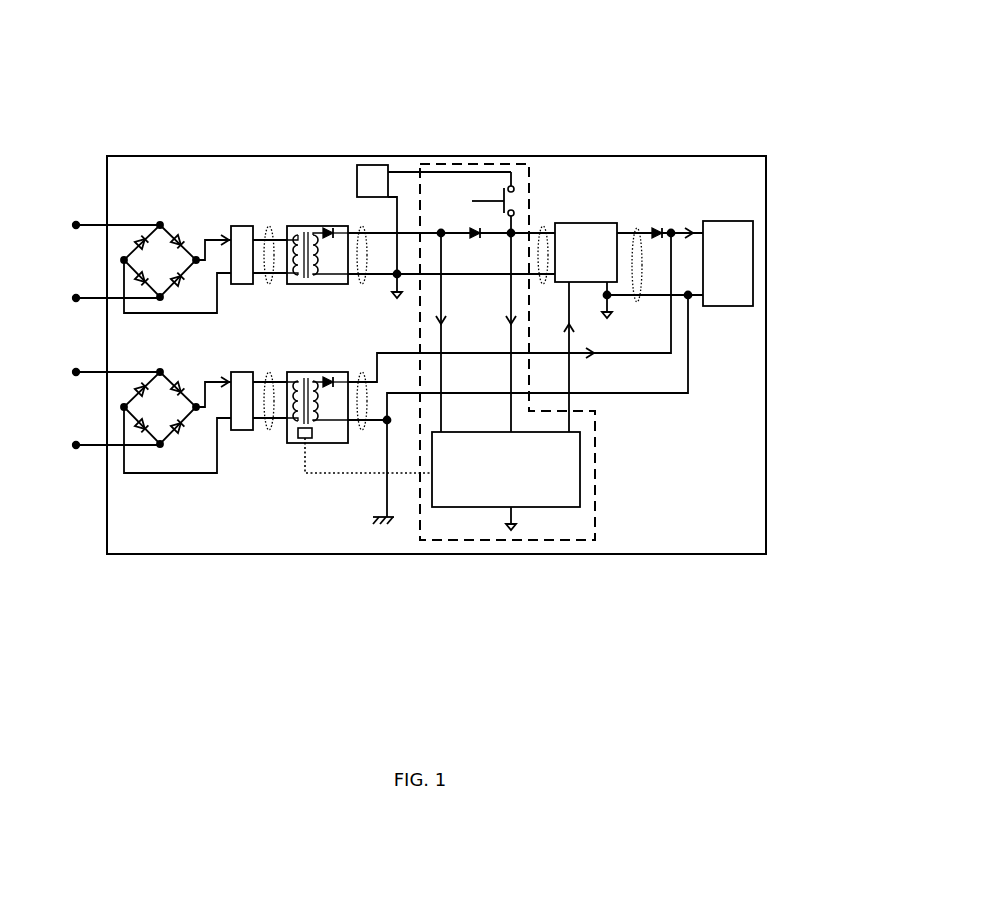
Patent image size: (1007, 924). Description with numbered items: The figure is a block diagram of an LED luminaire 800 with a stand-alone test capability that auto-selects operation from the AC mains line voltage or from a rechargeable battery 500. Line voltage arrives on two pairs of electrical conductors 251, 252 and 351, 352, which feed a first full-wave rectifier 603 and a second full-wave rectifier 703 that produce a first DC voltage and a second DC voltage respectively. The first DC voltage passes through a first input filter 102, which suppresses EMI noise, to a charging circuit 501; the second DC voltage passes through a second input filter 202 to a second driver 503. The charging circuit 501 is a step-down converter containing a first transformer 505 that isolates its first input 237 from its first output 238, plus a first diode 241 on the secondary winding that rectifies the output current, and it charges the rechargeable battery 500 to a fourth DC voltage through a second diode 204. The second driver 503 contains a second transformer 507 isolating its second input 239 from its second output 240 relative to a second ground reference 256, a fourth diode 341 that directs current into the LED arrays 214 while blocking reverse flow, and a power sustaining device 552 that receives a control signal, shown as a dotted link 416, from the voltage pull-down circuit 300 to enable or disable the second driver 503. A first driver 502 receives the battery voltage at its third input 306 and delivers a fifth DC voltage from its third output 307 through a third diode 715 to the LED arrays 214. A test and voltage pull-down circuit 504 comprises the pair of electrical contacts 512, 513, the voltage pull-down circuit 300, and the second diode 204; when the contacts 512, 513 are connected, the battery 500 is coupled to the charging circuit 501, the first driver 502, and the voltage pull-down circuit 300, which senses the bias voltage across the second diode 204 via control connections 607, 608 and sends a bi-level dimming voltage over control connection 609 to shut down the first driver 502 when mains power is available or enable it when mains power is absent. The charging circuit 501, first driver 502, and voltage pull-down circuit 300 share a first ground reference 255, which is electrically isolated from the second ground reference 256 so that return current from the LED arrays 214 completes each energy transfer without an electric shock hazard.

The electrical conductor 251 is at (75, 223).
The electrical conductor 252 is at (76, 299).
The electrical conductor 351 is at (76, 373).
The electrical conductor 352 is at (76, 446).
The first full-wave rectifier 603 is at (157, 211).
The second full-wave rectifier 703 is at (166, 462).
The first input filter 102 is at (245, 226).
The second input filter 202 is at (242, 371).
The first input 237 is at (268, 226).
The first output 238 is at (361, 227).
The second input 239 is at (268, 431).
The second output 240 is at (362, 431).
The third input 306 is at (543, 227).
The third output 307 is at (638, 229).
The charging circuit 501 is at (300, 183).
The first transformer 505 is at (306, 284).
The first diode 241 is at (327, 229).
The second driver 503 is at (309, 464).
The second transformer 507 is at (297, 442).
The fourth diode 341 is at (329, 370).
The power sustaining device 552 is at (303, 439).
The feedback signal line 416 is at (371, 474).
The rechargeable battery 500 is at (373, 165).
The electrical contact 512 is at (512, 186).
The electrical contact 513 is at (513, 211).
The second diode 204 is at (473, 229).
The LED luminaire 800 is at (413, 142).
The first driver 502 is at (589, 209).
The third diode 715 is at (661, 230).
The LED array 214 is at (722, 307).
The first ground reference 255 is at (394, 298).
The second ground reference 256 is at (388, 526).
The control connection 607 is at (443, 342).
The control connection 608 is at (511, 360).
The control connection 609 is at (570, 336).
The voltage pull-down circuit 300 is at (472, 521).
The test and voltage pull-down circuit 504 is at (592, 553).